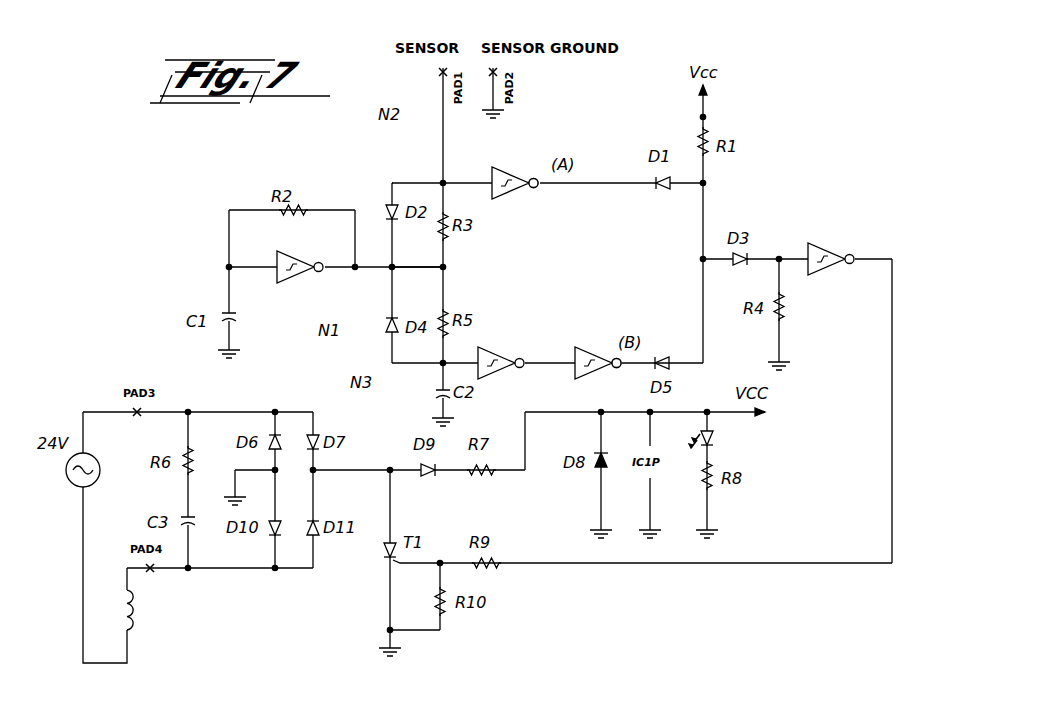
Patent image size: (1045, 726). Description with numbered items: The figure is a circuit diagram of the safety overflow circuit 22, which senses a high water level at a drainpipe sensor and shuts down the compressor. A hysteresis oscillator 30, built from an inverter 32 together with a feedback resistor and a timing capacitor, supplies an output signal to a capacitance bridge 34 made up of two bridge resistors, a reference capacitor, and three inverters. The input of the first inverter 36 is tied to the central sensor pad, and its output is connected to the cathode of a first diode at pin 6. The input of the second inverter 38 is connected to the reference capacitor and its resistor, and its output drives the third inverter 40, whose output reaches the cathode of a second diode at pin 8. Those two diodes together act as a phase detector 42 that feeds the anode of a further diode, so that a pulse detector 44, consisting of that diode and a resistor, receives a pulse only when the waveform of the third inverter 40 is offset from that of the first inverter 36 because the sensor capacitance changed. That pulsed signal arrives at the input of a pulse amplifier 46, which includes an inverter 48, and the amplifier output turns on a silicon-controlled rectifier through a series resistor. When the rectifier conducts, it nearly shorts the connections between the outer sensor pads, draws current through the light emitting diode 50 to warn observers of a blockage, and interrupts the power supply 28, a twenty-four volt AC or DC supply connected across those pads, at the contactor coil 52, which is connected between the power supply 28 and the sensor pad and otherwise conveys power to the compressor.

The pin 6 is at (536, 189).
The pin 8 is at (619, 370).
The safety overflow circuit 22 is at (757, 96).
The power supply 28 is at (66, 476).
The hysteresis oscillator 30 is at (287, 265).
The inverter 32 is at (297, 302).
The capacitance bridge 34 is at (592, 171).
The first inverter 36 is at (502, 199).
The second inverter 38 is at (498, 348).
The third inverter 40 is at (588, 348).
The phase detector 42 is at (666, 354).
The pulse detector 44 is at (727, 246).
The pulse amplifier 46 is at (858, 252).
The inverter 48 is at (836, 268).
The light emitting diode 50 is at (716, 438).
The contactor coil 52 is at (137, 605).